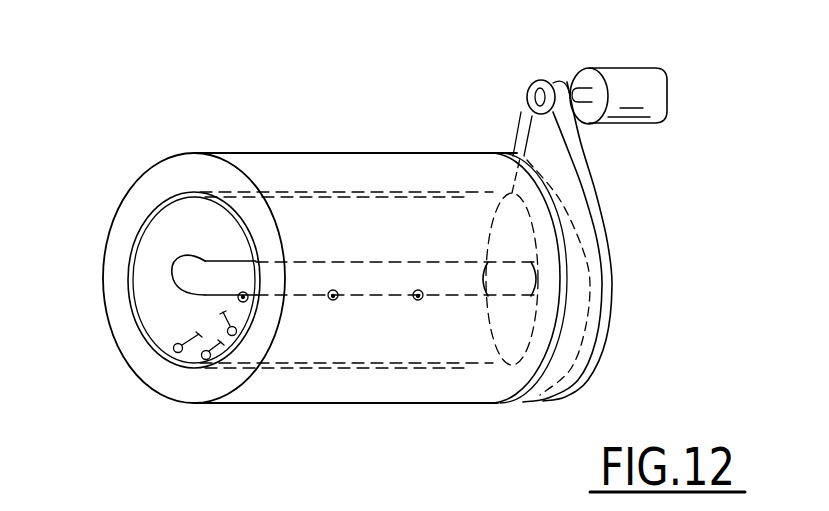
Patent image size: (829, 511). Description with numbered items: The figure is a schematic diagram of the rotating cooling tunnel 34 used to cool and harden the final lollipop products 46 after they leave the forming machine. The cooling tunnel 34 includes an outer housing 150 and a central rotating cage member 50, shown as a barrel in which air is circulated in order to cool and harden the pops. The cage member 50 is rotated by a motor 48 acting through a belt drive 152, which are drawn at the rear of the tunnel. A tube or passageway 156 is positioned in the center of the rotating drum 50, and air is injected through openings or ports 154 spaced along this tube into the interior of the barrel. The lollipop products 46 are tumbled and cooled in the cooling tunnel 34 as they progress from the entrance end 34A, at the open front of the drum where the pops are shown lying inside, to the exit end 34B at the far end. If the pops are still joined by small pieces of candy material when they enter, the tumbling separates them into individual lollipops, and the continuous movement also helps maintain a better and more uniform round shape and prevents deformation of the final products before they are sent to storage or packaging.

The cooling tunnel 34 is at (340, 279).
The entrance end 34A is at (158, 168).
The exit end 34B is at (550, 399).
The outer housing 150 is at (290, 153).
The rotating cage member 50 is at (400, 192).
The tube or passageway 156 is at (182, 270).
The openings or ports 154 is at (248, 301).
The lollipop products 46 is at (205, 361).
The belt drive 152 is at (580, 168).
The motor 48 is at (634, 72).